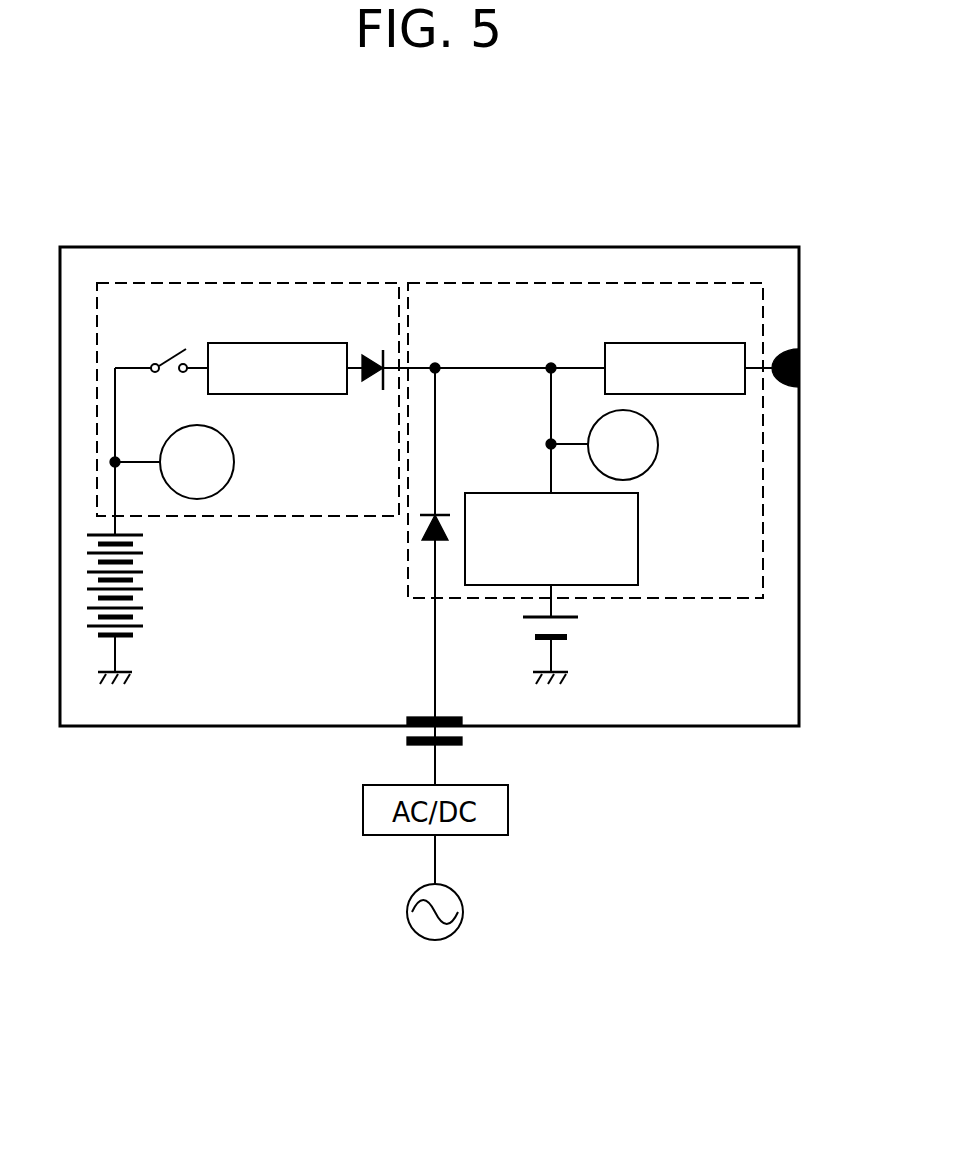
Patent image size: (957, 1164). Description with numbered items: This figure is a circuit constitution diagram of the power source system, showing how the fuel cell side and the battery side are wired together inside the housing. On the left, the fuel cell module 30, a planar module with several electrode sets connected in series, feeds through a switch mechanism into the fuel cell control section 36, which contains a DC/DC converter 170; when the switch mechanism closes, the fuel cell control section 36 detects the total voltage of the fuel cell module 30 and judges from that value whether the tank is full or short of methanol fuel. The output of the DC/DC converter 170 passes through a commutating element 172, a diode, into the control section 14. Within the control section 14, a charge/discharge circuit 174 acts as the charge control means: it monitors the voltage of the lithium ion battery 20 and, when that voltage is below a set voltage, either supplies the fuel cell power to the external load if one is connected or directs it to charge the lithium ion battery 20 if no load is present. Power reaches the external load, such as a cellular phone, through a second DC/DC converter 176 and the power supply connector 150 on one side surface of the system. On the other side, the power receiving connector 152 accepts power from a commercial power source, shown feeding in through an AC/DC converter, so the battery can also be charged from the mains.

The control section 14 is at (585, 433).
The lithium ion battery 20 is at (577, 625).
The fuel cell module 30 is at (157, 535).
The fuel cell control section 36 is at (248, 403).
The power supply connector 150 is at (790, 350).
The power receiving connector 152 is at (462, 721).
The DC/DC converter 170 is at (297, 343).
The commutating element 172 is at (367, 357).
The charge/discharge circuit 174 is at (638, 557).
The DC/DC converter 176 is at (692, 350).